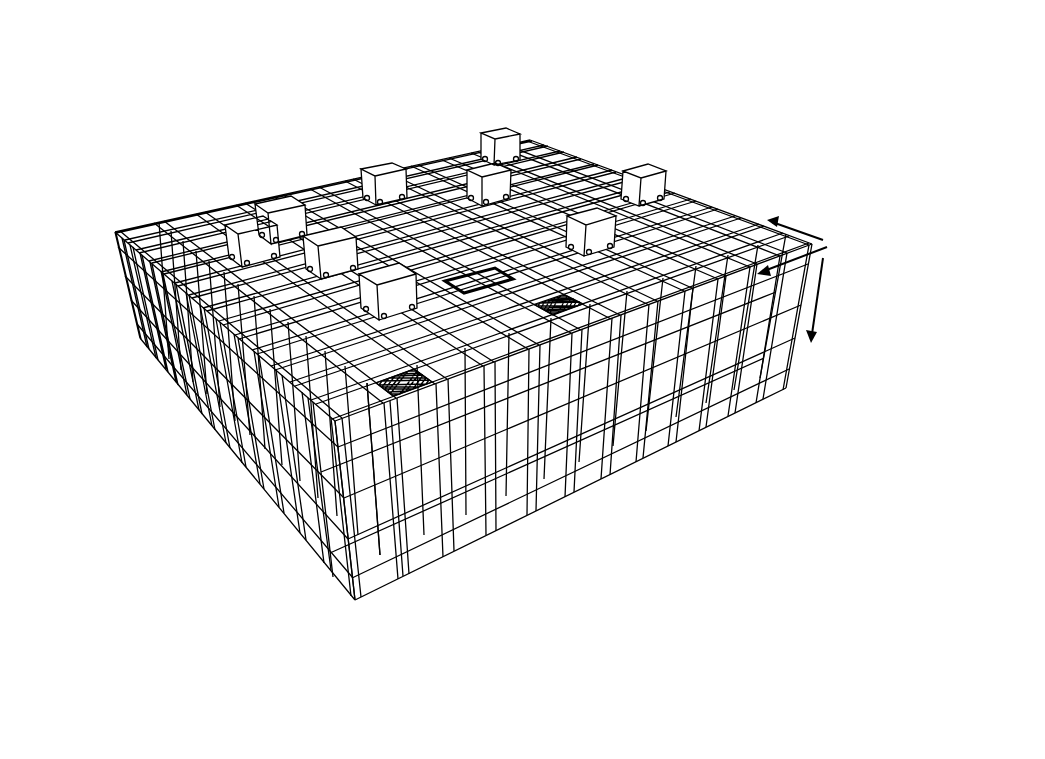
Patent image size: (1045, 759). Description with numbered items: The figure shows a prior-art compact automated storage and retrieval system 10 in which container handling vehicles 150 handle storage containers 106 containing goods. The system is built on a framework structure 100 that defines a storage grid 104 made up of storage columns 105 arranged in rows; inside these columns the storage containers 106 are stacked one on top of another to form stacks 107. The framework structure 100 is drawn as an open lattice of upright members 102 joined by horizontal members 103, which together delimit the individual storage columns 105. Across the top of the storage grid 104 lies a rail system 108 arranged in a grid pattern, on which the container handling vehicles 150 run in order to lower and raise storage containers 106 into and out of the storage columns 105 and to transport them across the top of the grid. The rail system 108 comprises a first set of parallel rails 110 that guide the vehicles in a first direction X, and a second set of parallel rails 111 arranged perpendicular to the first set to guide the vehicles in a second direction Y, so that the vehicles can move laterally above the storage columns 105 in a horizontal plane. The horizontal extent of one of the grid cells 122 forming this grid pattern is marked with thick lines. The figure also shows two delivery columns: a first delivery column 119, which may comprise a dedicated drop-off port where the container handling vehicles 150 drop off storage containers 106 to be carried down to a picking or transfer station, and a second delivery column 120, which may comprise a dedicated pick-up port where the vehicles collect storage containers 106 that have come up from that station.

The automated storage and retrieval system 10 is at (316, 72).
The framework structure 100 is at (122, 343).
The upright members 102 is at (343, 510).
The horizontal members 103 is at (640, 390).
The storage grid 104 is at (117, 243).
The storage columns 105 is at (270, 433).
The storage containers 106 is at (383, 533).
The stacks 107 is at (707, 417).
The rail system 108 is at (750, 232).
The first set of parallel rails 110 is at (706, 235).
The second set of parallel rails 111 is at (180, 230).
The first delivery column 119 is at (405, 384).
The second delivery column 120 is at (565, 327).
The grid cell 122 is at (462, 282).
The container handling vehicles 150 is at (515, 134).